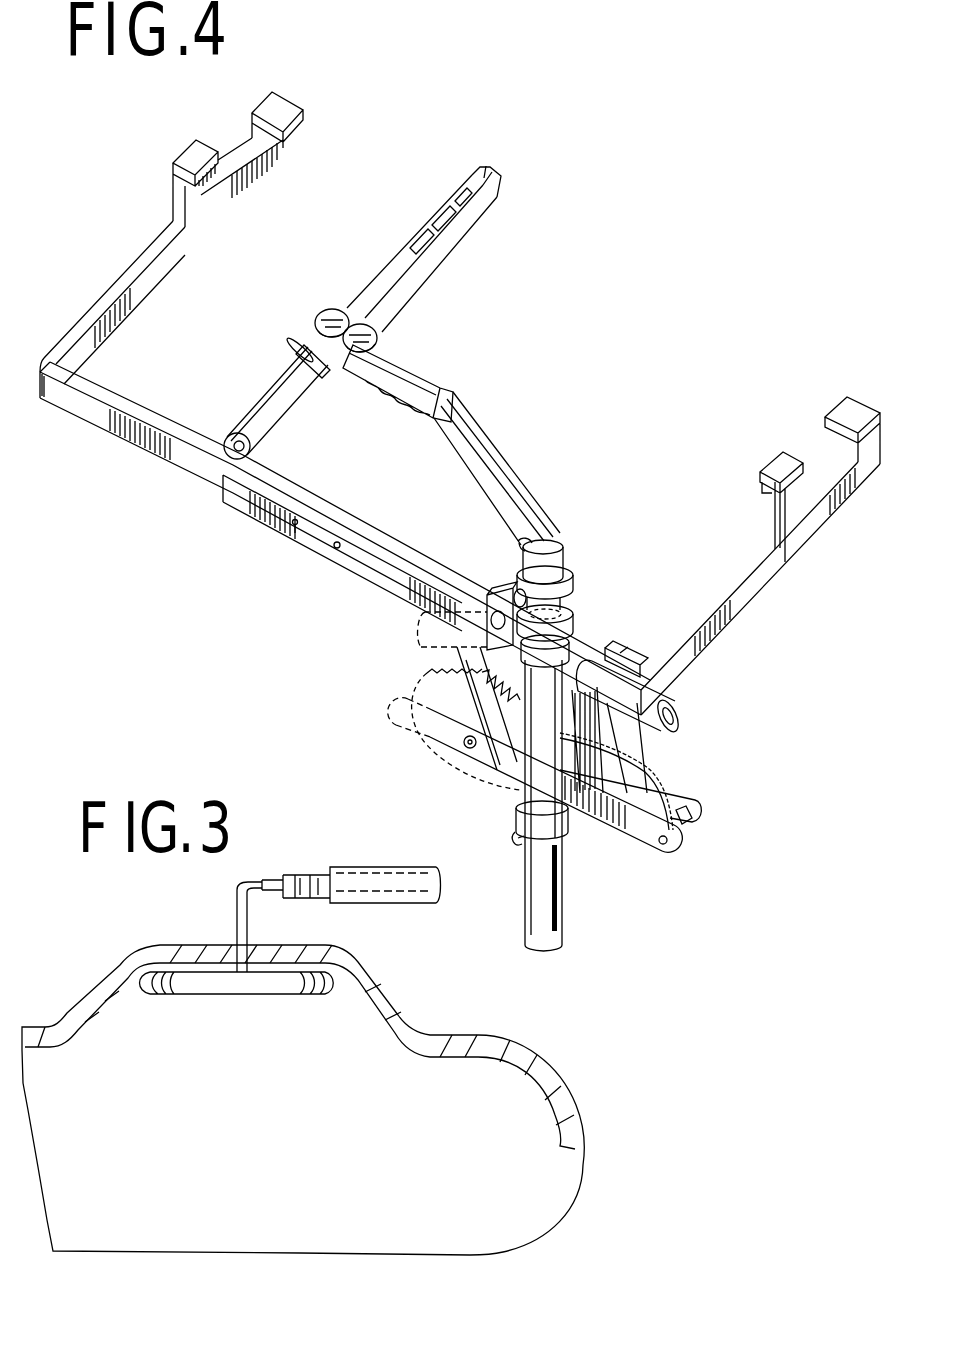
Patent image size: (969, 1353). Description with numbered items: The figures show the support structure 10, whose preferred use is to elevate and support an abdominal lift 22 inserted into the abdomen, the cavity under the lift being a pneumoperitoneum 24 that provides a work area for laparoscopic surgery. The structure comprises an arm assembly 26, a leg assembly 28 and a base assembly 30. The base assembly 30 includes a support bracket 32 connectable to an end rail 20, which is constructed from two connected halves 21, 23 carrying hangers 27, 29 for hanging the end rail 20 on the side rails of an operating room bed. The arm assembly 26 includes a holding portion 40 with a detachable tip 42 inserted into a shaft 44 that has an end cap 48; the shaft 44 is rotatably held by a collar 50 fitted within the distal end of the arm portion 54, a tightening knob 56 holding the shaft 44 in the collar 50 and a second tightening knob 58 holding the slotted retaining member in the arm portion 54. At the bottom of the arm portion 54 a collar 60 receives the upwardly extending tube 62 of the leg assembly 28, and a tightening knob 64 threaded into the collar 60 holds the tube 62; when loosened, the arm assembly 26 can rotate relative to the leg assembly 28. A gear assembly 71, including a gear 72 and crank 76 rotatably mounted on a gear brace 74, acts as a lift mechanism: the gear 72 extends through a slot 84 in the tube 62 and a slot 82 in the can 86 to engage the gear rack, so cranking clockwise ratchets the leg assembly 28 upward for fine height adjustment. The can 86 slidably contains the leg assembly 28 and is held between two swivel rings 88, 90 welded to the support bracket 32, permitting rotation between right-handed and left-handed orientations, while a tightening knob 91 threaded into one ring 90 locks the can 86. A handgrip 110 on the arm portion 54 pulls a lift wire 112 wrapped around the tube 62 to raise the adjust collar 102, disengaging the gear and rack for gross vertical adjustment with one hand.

In FIG. 4, the support structure 10 is at (418, 766).
In FIG. 4, the end rail 20 is at (295, 534).
In FIG. 4, the half of end rail 21 is at (91, 312).
In FIG. 3, the abdominal lift 22 is at (237, 919).
In FIG. 4, the half of end rail 23 is at (810, 536).
In FIG. 3, the pneumoperitoneum 24 is at (120, 1038).
In FIG. 4, the arm assembly 26 is at (501, 387).
In FIG. 4, the hanger 27 is at (205, 140).
In FIG. 4, the leg assembly 28 is at (585, 621).
In FIG. 4, the hanger 29 is at (787, 454).
In FIG. 4, the base assembly 30 is at (733, 790).
In FIG. 4, the support bracket 32 is at (606, 648).
In FIG. 4, the holding portion 40 is at (414, 231).
In FIG. 4, the detachable tip 42 is at (488, 180).
In FIG. 4, the shaft 44 is at (447, 247).
In FIG. 4, the end cap 48 is at (237, 436).
In FIG. 4, the collar 50 is at (307, 346).
In FIG. 4, the arm portion 54 is at (512, 470).
In FIG. 4, the tightening knob 56 is at (331, 309).
In FIG. 4, the tightening knob 58 is at (379, 334).
In FIG. 4, the collar 60 is at (563, 562).
In FIG. 4, the tube 62 is at (545, 805).
In FIG. 4, the tightening knob 64 is at (516, 598).
In FIG. 4, the gear assembly 71 is at (706, 816).
In FIG. 4, the gear 72 is at (601, 846).
In FIG. 4, the gear brace 74 is at (680, 846).
In FIG. 4, the crank 76 is at (677, 705).
In FIG. 4, the slot 82 is at (636, 733).
In FIG. 4, the slot 84 is at (558, 890).
In FIG. 4, the can 86 is at (510, 740).
In FIG. 4, the swivel ring 88 is at (470, 664).
In FIG. 4, the swivel ring 90 is at (520, 818).
In FIG. 4, the tightening knob 91 is at (520, 846).
In FIG. 4, the adjust collar 102 is at (574, 580).
In FIG. 4, the handgrip 110 is at (377, 392).
In FIG. 4, the lift wire 112 is at (519, 543).